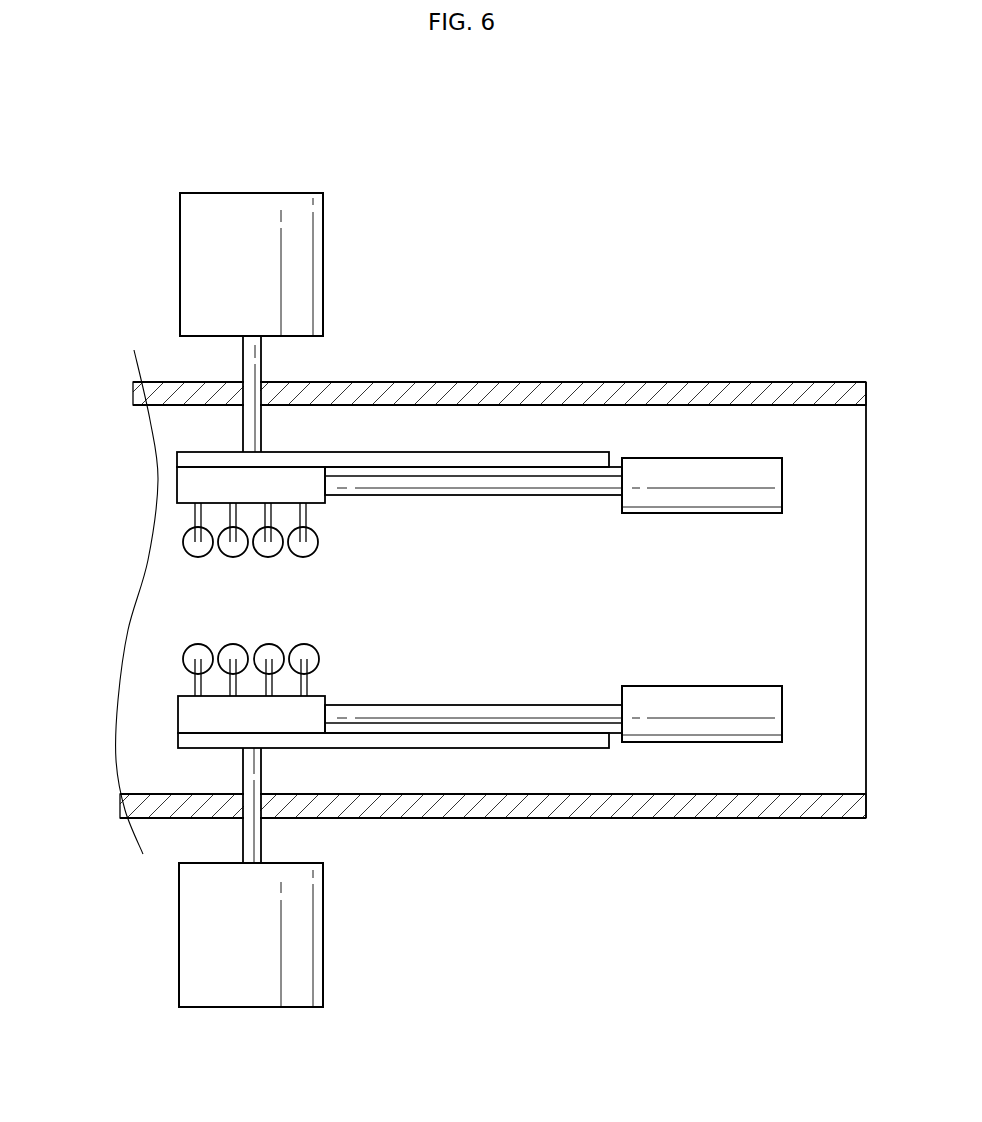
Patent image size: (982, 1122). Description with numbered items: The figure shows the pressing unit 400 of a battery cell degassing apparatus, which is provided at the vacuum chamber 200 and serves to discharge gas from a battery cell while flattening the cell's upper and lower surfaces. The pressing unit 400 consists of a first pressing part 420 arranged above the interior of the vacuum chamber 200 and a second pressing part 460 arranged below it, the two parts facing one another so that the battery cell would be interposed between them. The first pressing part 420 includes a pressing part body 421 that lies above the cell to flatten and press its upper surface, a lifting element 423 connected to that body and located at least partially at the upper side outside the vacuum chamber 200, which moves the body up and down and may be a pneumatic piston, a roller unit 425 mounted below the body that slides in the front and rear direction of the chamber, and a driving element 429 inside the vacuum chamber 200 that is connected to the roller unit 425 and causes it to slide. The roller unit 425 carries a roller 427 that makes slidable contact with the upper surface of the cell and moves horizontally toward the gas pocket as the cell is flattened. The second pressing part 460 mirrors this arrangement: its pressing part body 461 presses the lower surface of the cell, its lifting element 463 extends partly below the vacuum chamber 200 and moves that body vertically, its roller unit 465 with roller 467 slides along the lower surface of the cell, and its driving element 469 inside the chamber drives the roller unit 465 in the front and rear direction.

The pressing unit 400 is at (105, 152).
The vacuum chamber 200 is at (645, 381).
The first pressing part 420 is at (155, 221).
The pressing part body 421 is at (187, 460).
The lifting element 423 is at (324, 232).
The roller unit 425 is at (187, 488).
The roller 427 is at (184, 541).
The driving element 429 is at (718, 473).
The second pressing part 460 is at (157, 980).
The pressing part body 461 is at (188, 740).
The lifting element 463 is at (324, 935).
The roller unit 465 is at (188, 712).
The roller 467 is at (184, 657).
The driving element 469 is at (718, 726).